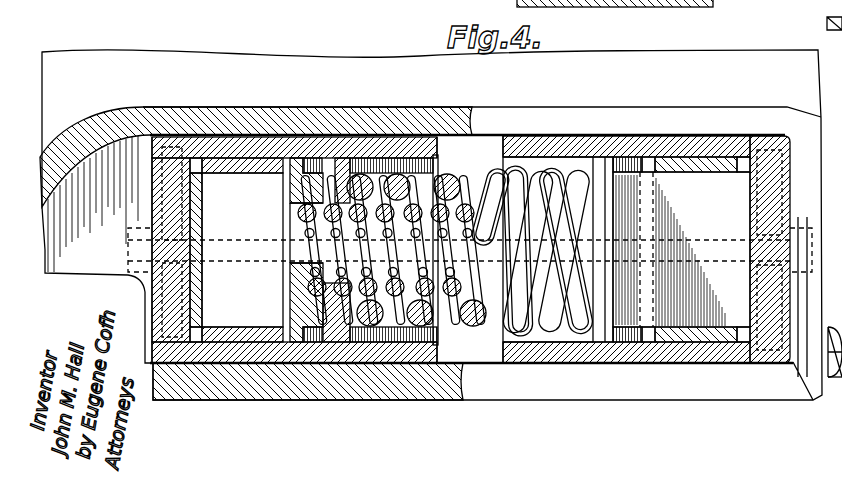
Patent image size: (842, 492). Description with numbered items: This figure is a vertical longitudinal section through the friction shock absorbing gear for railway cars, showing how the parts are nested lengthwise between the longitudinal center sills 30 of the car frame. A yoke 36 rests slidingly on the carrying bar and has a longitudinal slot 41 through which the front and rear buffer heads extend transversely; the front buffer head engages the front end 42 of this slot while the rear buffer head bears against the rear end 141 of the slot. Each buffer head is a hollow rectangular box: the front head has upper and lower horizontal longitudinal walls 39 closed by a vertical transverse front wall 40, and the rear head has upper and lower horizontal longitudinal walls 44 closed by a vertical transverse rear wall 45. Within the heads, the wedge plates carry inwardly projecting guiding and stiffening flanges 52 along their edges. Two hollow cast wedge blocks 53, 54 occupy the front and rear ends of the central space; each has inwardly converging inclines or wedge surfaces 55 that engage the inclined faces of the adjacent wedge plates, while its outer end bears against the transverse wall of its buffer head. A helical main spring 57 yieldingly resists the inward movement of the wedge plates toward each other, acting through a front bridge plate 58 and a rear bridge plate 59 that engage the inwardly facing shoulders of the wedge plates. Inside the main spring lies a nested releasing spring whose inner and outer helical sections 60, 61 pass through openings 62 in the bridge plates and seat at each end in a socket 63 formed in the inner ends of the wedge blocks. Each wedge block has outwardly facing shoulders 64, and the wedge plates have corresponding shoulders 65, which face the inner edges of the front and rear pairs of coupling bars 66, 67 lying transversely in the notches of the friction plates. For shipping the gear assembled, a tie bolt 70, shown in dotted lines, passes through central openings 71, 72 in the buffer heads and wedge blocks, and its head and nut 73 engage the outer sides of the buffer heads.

The longitudinal center sills 30 is at (431, 225).
The yoke 36 is at (562, 112).
The upper and lower horizontal longitudinal walls 39 is at (725, 332).
The vertical transverse front wall 40 is at (787, 177).
The longitudinal slot 41 is at (618, 134).
The front end of slot 42 is at (790, 210).
The upper and lower horizontal longitudinal walls 44 is at (382, 361).
The vertical transverse rear wall 45 is at (170, 167).
The guiding and stiffening flanges 52 is at (433, 334).
The wedge block 53 is at (681, 249).
The wedge block 54 is at (297, 225).
The inclines or wedge surfaces 55 is at (632, 308).
The main spring 57 is at (490, 178).
The front bridge plate 58 is at (600, 334).
The rear bridge plate 59 is at (342, 327).
The inner helical section of releasing spring 60 is at (302, 268).
The outer helical section of releasing spring 61 is at (297, 287).
The openings in bridge plates 62 is at (330, 323).
The socket 63 is at (293, 200).
The outwardly facing shoulders 64 is at (650, 330).
The shoulders of wedge plates 65 is at (835, 380).
The front coupling bars 66 is at (687, 333).
The rear coupling bars 67 is at (240, 338).
The tie bolt or rod 70 is at (290, 252).
The opening 71 is at (190, 250).
The opening 72 is at (195, 252).
The head and nut 73 is at (128, 231).
The rear end of slot 141 is at (195, 335).